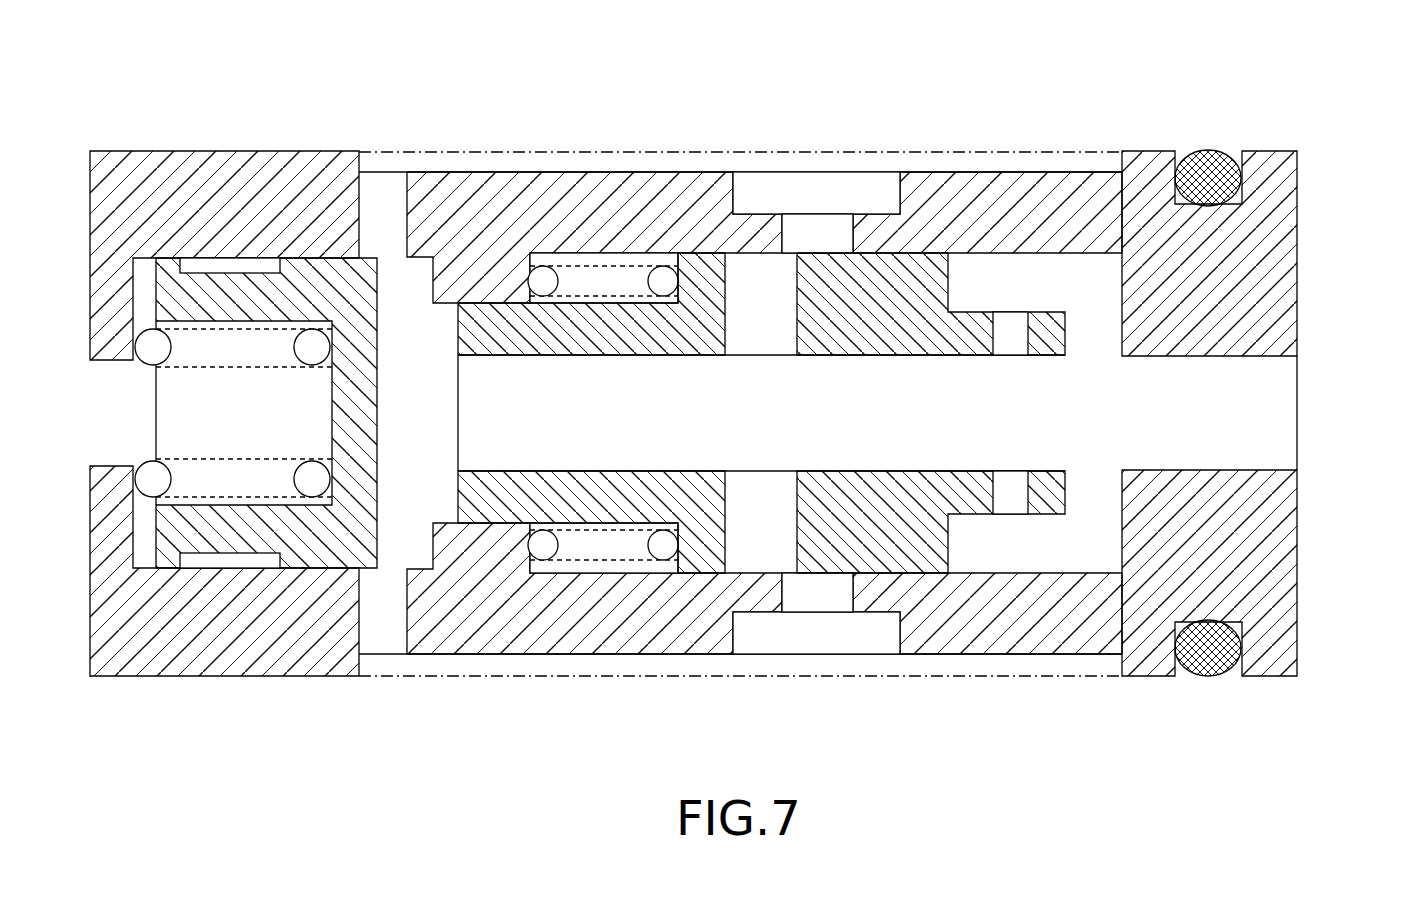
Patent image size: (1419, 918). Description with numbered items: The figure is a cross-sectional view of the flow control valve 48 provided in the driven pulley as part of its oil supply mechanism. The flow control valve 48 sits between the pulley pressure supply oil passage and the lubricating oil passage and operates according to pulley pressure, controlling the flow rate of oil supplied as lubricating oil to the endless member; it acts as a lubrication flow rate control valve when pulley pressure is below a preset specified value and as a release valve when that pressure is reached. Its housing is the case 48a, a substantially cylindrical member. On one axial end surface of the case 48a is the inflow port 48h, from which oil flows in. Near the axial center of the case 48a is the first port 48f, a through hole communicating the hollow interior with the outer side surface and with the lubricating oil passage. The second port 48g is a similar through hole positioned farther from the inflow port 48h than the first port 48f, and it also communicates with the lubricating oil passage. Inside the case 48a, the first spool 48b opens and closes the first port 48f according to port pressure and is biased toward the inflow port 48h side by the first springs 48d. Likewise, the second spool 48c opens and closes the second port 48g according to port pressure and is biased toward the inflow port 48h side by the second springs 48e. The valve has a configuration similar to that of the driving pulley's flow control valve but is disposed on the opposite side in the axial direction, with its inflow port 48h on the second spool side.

The flow control valve 48 is at (1158, 138).
The case 48a is at (334, 150).
The first spool 48b is at (956, 471).
The second spool 48c is at (377, 452).
The first springs 48d is at (603, 416).
The second springs 48e is at (226, 414).
The first port 48f is at (853, 233).
The second port 48g is at (407, 210).
The inflow port 48h is at (1274, 470).